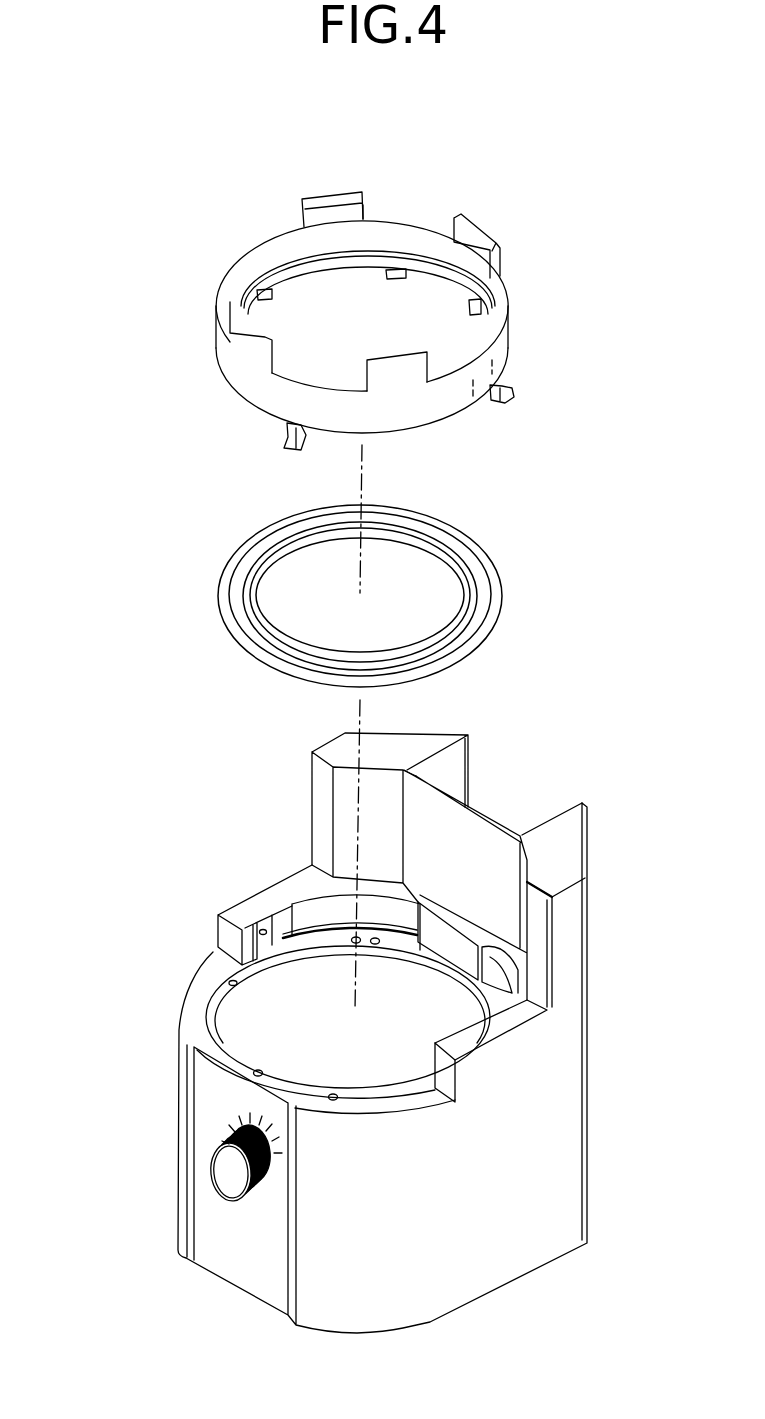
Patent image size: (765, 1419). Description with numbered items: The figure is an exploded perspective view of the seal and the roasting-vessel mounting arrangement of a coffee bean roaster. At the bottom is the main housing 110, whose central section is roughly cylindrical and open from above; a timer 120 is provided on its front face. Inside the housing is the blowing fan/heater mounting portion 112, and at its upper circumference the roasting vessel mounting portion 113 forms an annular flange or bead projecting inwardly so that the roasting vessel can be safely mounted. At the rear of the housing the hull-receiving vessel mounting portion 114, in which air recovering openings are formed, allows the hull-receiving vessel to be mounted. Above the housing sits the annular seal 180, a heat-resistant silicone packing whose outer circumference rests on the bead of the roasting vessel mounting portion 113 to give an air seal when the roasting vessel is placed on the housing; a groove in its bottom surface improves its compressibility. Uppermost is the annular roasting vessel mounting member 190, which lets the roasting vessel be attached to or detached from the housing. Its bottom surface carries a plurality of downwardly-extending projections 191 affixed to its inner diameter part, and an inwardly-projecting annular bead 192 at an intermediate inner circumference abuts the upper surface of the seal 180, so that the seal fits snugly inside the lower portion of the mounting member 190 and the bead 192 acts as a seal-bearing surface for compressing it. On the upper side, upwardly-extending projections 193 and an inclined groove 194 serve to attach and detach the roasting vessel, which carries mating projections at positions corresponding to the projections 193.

The main housing 110 is at (366, 1009).
The blowing fan/heater mounting portion 112 is at (313, 1055).
The roasting vessel mounting portion 113 is at (223, 1003).
The hull-receiving vessel mounting portion 114 is at (458, 768).
The timer 120 is at (215, 1210).
The seal 180 is at (415, 585).
The roasting vessel mounting member 190 is at (416, 287).
The downwardly-extending projections 191 is at (512, 393).
The annular bead 192 is at (472, 293).
The upwardly-extending projections 193 is at (313, 198).
The inclined groove 194 is at (367, 212).